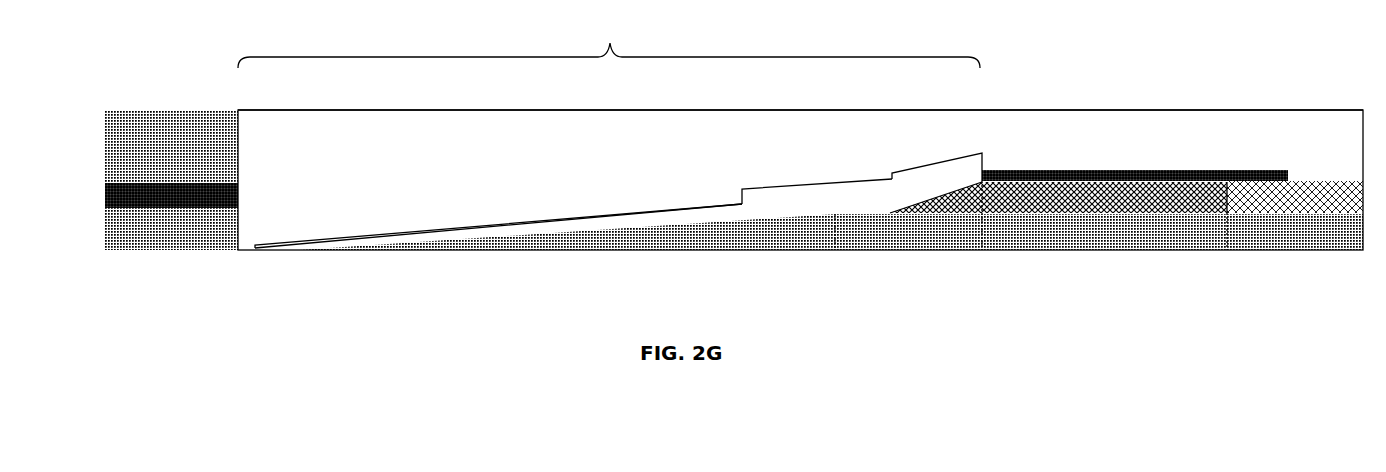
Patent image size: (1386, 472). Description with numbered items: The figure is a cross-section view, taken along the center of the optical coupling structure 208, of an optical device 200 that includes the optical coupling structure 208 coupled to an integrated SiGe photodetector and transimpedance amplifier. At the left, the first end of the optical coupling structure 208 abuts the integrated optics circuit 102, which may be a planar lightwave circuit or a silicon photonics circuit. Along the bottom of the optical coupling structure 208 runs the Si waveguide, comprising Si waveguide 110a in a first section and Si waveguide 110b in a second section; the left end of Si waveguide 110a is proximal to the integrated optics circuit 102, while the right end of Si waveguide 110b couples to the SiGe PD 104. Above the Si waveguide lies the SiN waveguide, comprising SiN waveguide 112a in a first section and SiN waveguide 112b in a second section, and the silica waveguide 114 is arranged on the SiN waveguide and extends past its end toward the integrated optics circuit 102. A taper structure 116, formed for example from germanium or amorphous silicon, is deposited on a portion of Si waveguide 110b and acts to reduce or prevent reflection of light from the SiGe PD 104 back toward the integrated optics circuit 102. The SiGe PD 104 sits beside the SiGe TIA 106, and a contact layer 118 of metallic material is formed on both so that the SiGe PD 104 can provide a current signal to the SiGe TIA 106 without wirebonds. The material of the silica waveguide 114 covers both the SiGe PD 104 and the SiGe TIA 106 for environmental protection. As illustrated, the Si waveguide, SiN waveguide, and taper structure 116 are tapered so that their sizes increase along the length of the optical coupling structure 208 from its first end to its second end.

The optical device 200 is at (226, 26).
The optical coupling structure 208 is at (609, 42).
The integrated optics circuit 102 is at (190, 136).
The SiGe PD 104 is at (1124, 207).
The SiGe TIA 106 is at (1316, 207).
The Si waveguide 110a is at (707, 243).
The Si waveguide 110b is at (897, 243).
The SiN waveguide 112a is at (591, 222).
The SiN waveguide 112b is at (781, 195).
The silica waveguide 114 is at (343, 154).
The taper structure 116 is at (954, 200).
The contact layer 118 is at (1122, 170).